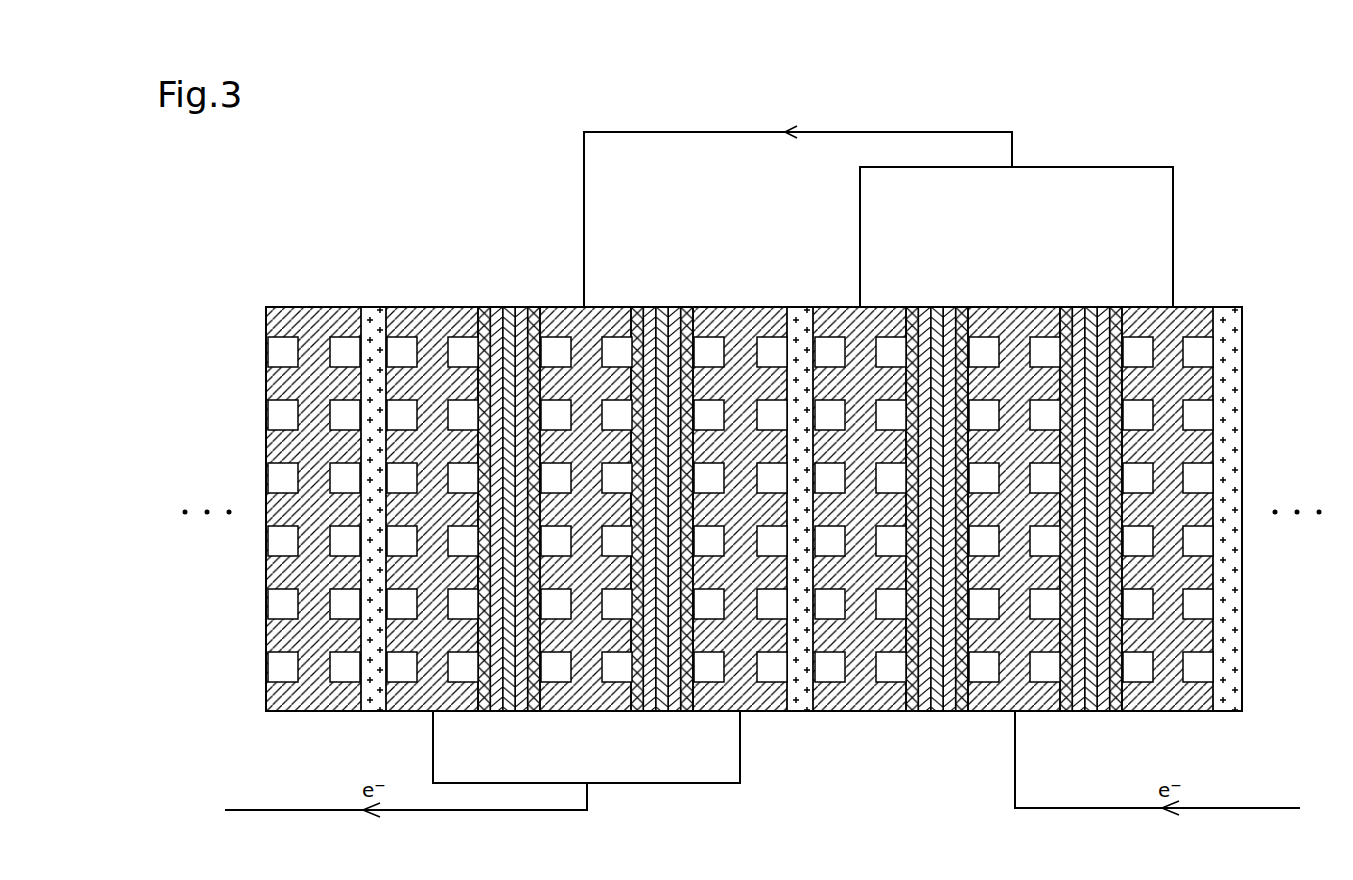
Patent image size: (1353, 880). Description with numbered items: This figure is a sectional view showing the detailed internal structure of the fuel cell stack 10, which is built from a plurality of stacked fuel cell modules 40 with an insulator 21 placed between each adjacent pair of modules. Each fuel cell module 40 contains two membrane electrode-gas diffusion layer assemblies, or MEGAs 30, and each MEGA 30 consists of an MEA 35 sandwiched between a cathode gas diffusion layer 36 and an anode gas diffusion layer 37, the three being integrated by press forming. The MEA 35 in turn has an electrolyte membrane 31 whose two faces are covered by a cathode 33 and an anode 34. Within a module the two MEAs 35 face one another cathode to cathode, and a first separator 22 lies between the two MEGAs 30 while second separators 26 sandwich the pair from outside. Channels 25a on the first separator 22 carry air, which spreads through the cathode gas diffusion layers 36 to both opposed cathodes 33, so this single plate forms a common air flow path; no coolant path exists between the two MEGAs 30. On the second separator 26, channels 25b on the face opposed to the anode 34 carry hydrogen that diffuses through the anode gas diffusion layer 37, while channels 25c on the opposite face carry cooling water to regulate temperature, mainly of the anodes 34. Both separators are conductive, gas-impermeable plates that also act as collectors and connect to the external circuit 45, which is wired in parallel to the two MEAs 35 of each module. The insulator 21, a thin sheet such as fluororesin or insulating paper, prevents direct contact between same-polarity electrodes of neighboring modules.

The fuel cell stack 10 is at (335, 120).
The insulator 21 is at (367, 306).
The first separator 22 is at (1011, 306).
The channels 25a is at (555, 672).
The channels 25b is at (288, 672).
The channels 25c is at (344, 668).
The second separator 26 is at (313, 306).
The membrane electrode-gas diffusion layer assembly (MEGA) 30 is at (438, 231).
The electrolyte membrane 31 is at (509, 306).
The cathode 33 is at (521, 306).
The anode 34 is at (496, 306).
The MEA (membrane electrode assembly) 35 is at (462, 265).
The cathode gas diffusion layer 36 is at (534, 306).
The anode gas diffusion layer 37 is at (484, 306).
The fuel cell module 40 is at (468, 148).
The external circuit 45 is at (1174, 207).